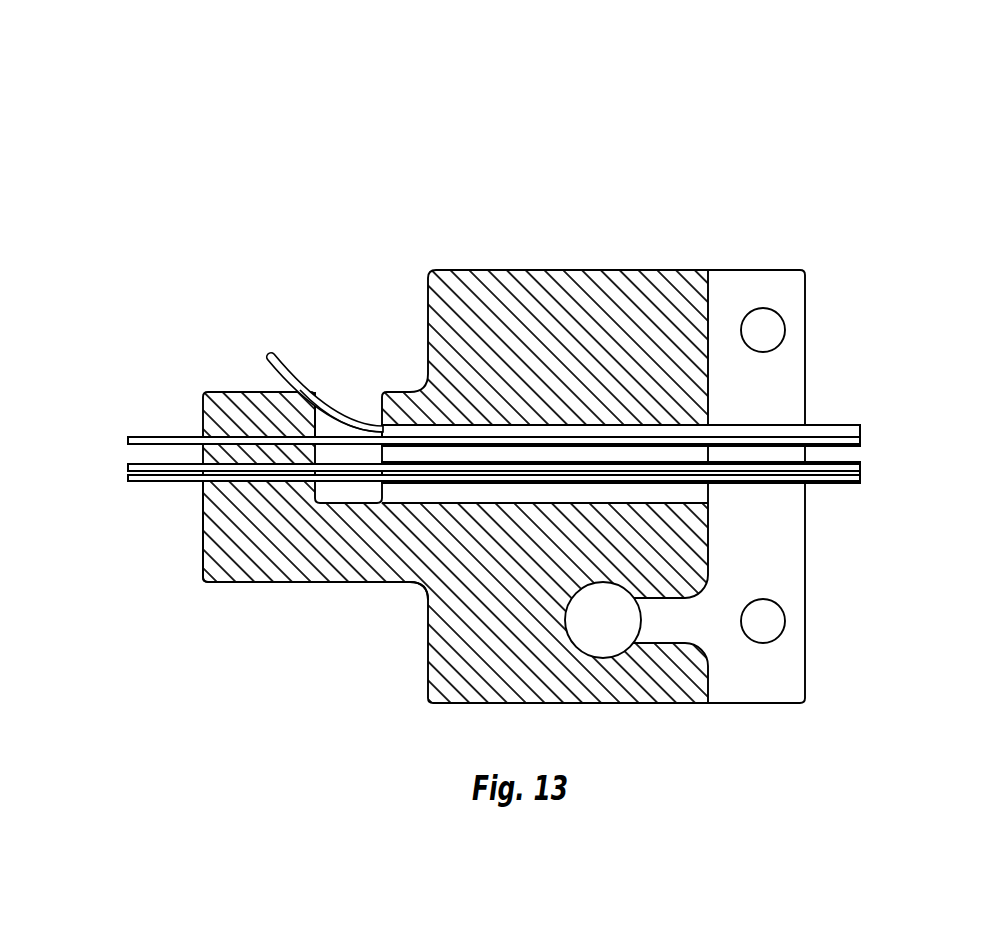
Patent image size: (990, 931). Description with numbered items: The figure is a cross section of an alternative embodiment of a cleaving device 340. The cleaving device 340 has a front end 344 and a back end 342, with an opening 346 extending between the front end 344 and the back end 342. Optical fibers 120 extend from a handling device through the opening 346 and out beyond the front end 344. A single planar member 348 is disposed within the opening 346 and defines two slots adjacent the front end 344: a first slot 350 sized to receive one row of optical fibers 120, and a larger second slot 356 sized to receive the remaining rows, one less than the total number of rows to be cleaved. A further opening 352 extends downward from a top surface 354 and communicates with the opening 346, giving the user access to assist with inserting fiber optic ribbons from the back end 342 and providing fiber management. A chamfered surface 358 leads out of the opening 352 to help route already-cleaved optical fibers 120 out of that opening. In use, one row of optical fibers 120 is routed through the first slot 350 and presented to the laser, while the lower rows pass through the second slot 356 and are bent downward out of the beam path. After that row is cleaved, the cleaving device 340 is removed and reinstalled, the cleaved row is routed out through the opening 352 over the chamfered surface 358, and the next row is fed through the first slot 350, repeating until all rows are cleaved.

The cleaving device 340 is at (502, 376).
The back end 342 is at (880, 360).
The front end 344 is at (203, 540).
The opening 346 is at (680, 457).
The planar member 348 is at (203, 451).
The first slot 350 is at (188, 430).
The opening 352 is at (363, 406).
The top surface 354 is at (245, 392).
The second slot 356 is at (196, 482).
The chamfered surface 358 is at (319, 413).
The optical fibers 120 is at (277, 354).